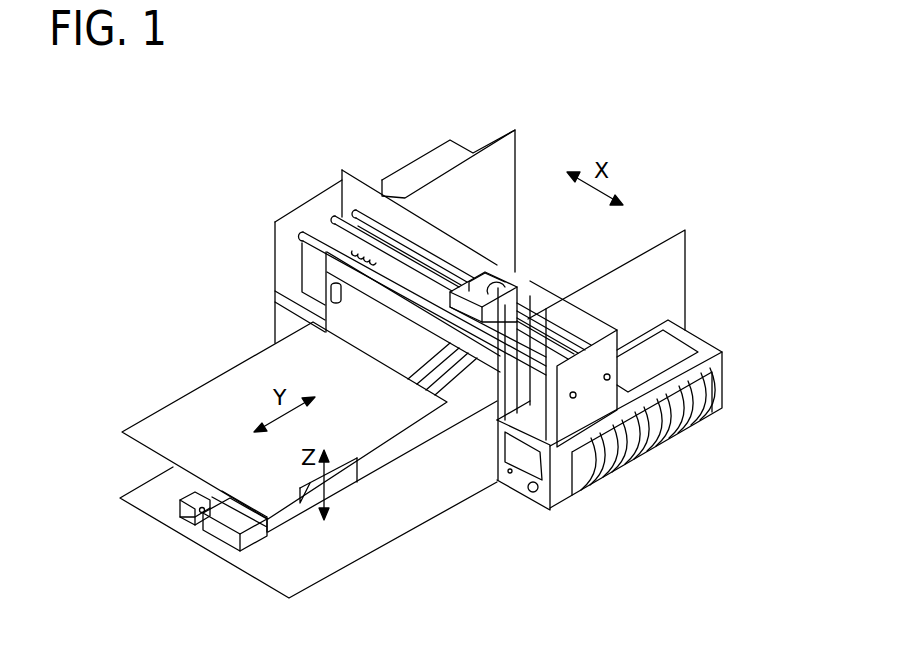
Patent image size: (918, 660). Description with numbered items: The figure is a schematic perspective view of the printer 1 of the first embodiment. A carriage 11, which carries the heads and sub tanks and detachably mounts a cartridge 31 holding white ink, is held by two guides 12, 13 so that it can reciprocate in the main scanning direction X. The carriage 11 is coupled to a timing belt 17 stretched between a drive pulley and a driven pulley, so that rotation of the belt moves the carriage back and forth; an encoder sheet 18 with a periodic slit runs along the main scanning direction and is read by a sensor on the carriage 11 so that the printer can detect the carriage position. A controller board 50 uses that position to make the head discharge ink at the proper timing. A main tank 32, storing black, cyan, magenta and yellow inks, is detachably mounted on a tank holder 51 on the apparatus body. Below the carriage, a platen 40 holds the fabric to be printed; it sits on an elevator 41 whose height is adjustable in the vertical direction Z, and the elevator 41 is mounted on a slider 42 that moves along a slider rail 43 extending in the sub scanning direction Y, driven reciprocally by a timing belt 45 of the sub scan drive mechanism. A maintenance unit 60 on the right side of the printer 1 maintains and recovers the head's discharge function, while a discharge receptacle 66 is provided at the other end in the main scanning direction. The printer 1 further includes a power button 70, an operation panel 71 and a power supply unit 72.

The printer 1 is at (346, 90).
The carriage 11 is at (510, 308).
The guide 12 is at (336, 246).
The guide 13 is at (302, 235).
The timing belt 17 is at (385, 230).
The encoder sheet 18 is at (357, 200).
The cartridge 31 is at (498, 282).
The main tank 32 is at (712, 408).
The platen 40 is at (197, 402).
The elevator 41 is at (337, 482).
The slider 42 is at (285, 515).
The slider rail 43 is at (223, 533).
The timing belt 45 is at (178, 512).
The controller board 50 is at (687, 350).
The tank holder 51 is at (718, 367).
The maintenance unit 60 is at (562, 362).
The discharge receptacle 66 is at (333, 218).
The power button 70 is at (531, 493).
The operation panel 71 is at (527, 465).
The power supply unit 72 is at (447, 140).